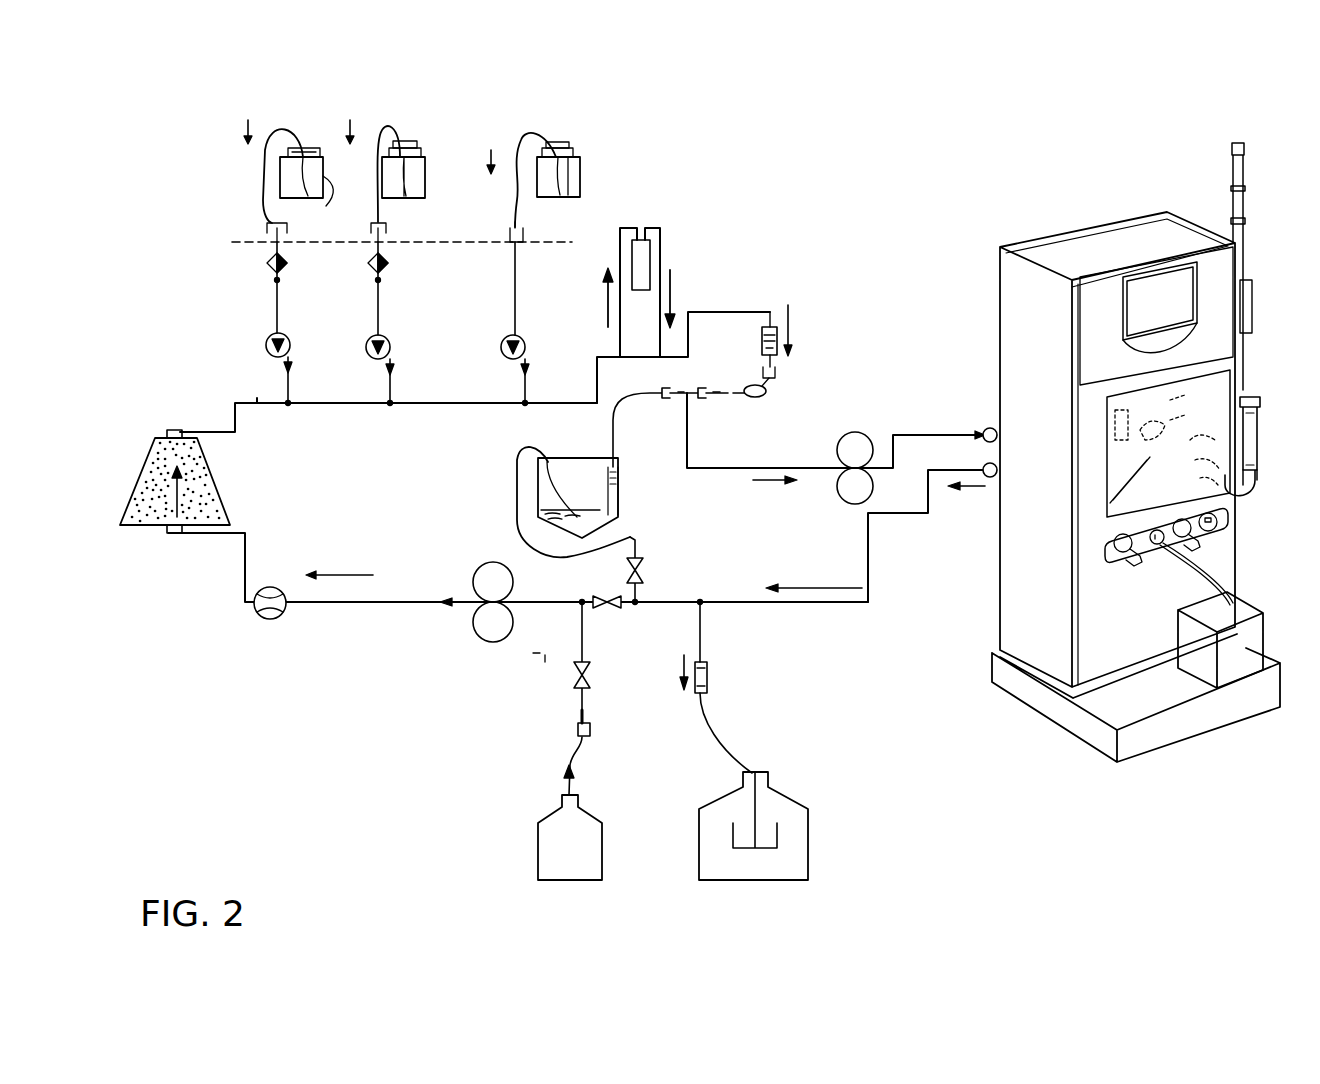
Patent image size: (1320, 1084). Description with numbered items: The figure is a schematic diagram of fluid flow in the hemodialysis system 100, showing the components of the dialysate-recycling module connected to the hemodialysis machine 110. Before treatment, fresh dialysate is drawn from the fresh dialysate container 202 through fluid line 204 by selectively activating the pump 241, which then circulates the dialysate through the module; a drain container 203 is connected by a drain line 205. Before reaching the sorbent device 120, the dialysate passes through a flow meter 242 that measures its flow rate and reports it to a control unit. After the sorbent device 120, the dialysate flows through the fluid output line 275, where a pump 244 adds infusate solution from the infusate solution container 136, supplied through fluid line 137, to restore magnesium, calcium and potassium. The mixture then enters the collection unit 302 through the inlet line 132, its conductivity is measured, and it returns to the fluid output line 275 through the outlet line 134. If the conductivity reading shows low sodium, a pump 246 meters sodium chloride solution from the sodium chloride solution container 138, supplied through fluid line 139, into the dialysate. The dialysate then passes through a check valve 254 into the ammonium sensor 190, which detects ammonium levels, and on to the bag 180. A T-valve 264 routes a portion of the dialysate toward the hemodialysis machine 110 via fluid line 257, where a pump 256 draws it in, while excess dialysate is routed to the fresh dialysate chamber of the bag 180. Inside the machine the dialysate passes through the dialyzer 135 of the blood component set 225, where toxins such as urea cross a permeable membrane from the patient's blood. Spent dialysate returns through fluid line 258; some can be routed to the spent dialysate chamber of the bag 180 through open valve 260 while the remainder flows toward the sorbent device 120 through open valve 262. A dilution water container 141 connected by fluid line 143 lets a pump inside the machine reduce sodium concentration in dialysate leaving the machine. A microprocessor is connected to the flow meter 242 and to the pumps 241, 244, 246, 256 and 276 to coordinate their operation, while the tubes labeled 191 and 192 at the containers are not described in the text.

The hemodialysis system 100 is at (998, 152).
The hemodialysis machine 110 is at (1120, 243).
The sorbent device 120 is at (140, 475).
The inlet line 132 is at (618, 343).
The outlet line 134 is at (662, 262).
The dialyzer 135 is at (1253, 462).
The infusate solution container 136 is at (427, 173).
The fluid line 137 is at (385, 120).
The sodium chloride solution container 138 is at (579, 163).
The fluid line 139 is at (522, 133).
The dilution water container 141 is at (1260, 630).
The fluid line 143 is at (1195, 568).
The bag 180 is at (620, 497).
The ammonium sensor 190 is at (775, 391).
The concentrate tube 191 is at (307, 153).
The concentrate container 192 is at (263, 185).
The fresh dialysate container 202 is at (538, 840).
The drain container 203 is at (808, 825).
The fluid line 204 is at (573, 748).
The drain line 205 is at (718, 737).
The blood component set 225 is at (1243, 380).
The pump 241 is at (485, 563).
The flow meter 242 is at (266, 620).
The pump 244 is at (380, 337).
The pump 246 is at (527, 347).
The check valve 254 is at (772, 325).
The pump 256 is at (852, 431).
The fluid line 257 is at (702, 467).
The fluid line 258 is at (866, 552).
The valve 260 is at (641, 568).
The valve 262 is at (603, 598).
The T-valve 264 is at (688, 392).
The fluid output line 275 is at (208, 432).
The pump 276 is at (263, 342).
The collection unit 302 is at (620, 257).